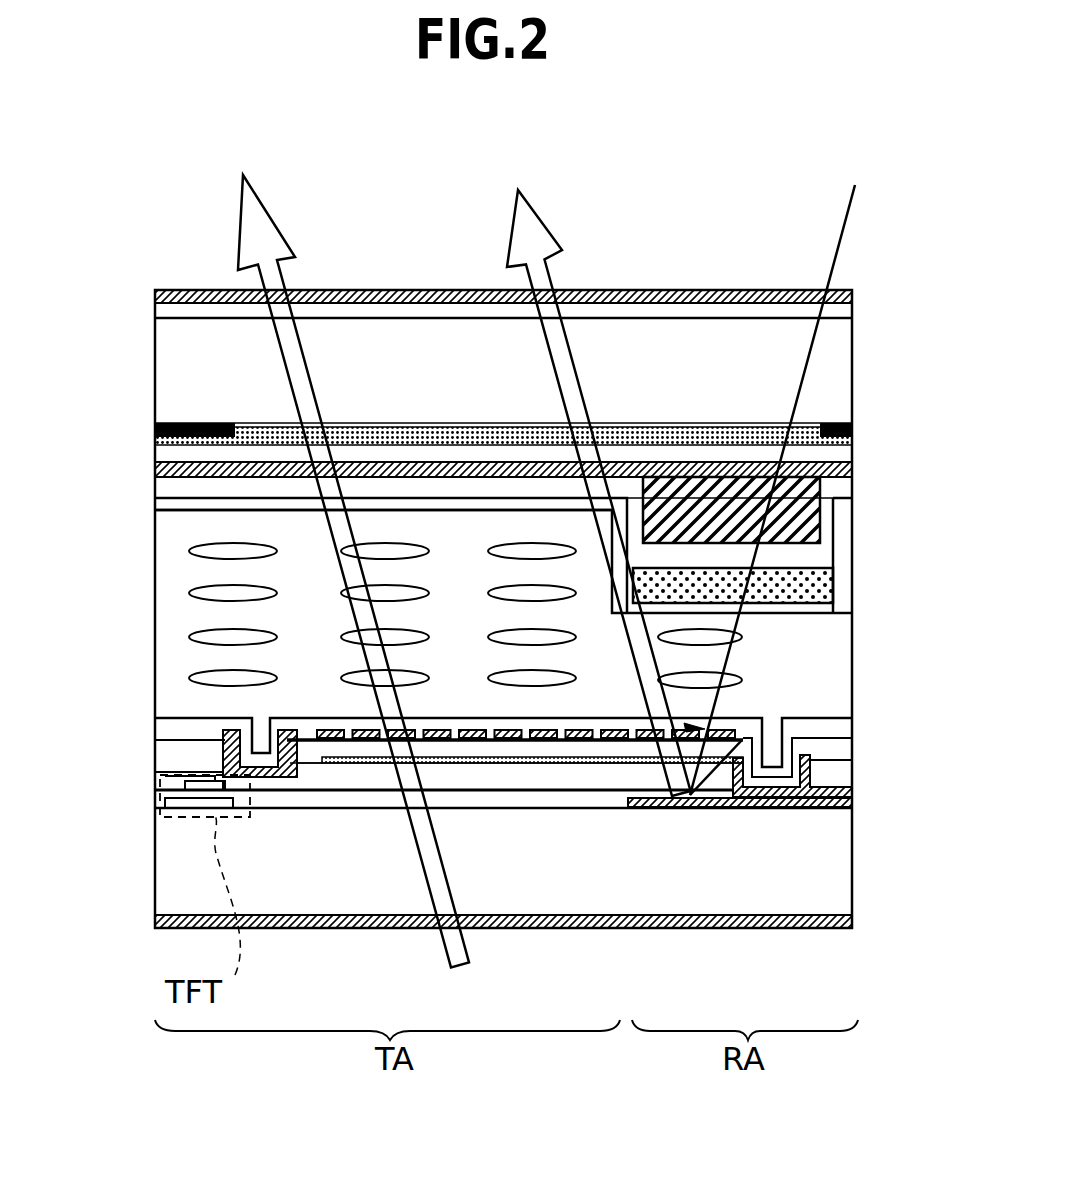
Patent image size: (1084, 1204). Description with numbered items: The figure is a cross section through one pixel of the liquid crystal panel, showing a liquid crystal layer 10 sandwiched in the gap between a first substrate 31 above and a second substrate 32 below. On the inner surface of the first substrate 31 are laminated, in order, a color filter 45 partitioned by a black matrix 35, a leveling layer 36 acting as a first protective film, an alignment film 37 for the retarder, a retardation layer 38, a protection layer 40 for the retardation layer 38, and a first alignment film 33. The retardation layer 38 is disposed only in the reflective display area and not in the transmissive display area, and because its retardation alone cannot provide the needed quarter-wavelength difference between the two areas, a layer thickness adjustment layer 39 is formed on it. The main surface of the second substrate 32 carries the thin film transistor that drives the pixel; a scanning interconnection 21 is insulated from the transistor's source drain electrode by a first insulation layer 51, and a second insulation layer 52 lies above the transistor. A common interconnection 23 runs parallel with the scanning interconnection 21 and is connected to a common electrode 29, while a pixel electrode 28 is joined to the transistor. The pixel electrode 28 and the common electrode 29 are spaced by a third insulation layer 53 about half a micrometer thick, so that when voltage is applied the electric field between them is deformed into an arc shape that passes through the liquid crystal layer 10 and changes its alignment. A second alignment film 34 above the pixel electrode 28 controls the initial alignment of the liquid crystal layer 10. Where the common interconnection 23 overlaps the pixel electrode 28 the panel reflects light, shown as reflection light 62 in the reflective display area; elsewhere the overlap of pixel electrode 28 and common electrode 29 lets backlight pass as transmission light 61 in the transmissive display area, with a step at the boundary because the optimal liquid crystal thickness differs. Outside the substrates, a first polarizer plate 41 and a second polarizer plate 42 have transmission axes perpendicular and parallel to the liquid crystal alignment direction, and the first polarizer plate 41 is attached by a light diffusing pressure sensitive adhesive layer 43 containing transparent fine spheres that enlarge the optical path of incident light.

The liquid crystal layer 10 is at (795, 672).
The scanning interconnection 21 is at (170, 805).
The common interconnection 23 is at (790, 808).
The pixel electrode 28 is at (480, 742).
The common electrode 29 is at (548, 764).
The first substrate 31 is at (168, 380).
The second substrate 32 is at (175, 880).
The first alignment film 33 is at (178, 505).
The second alignment film 34 is at (175, 738).
The black matrix 35 is at (152, 429).
The leveling layer 36 is at (172, 453).
The alignment film for retardation layer 37 is at (172, 482).
The retardation layer 38 is at (822, 530).
The layer thickness adjustment layer 39 is at (825, 590).
The protection layer 40 is at (170, 500).
The first polarizer plate 41 is at (165, 294).
The second polarizer plate 42 is at (178, 922).
The pressure sensitive adhesive layer 43 is at (165, 318).
The color filter 45 is at (825, 428).
The first insulation layer 51 is at (165, 793).
The second insulation layer 52 is at (165, 778).
The third insulation layer 53 is at (175, 752).
The transmission light 61 is at (260, 235).
The reflection light 62 is at (528, 235).